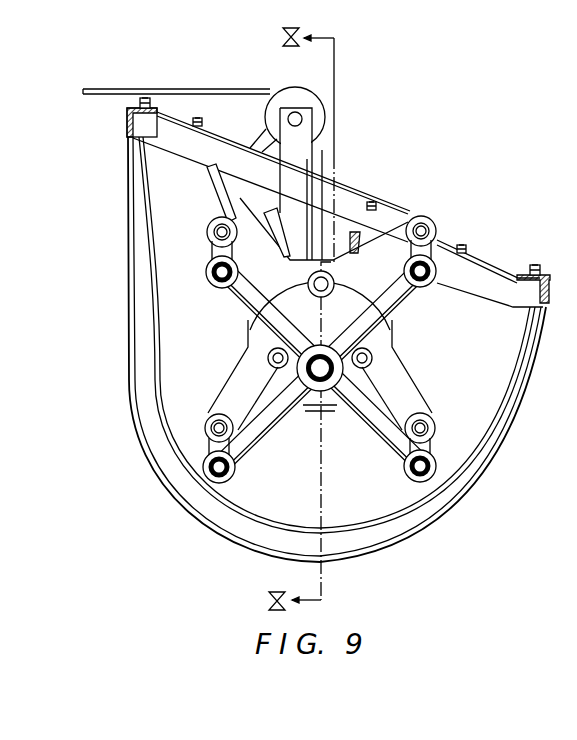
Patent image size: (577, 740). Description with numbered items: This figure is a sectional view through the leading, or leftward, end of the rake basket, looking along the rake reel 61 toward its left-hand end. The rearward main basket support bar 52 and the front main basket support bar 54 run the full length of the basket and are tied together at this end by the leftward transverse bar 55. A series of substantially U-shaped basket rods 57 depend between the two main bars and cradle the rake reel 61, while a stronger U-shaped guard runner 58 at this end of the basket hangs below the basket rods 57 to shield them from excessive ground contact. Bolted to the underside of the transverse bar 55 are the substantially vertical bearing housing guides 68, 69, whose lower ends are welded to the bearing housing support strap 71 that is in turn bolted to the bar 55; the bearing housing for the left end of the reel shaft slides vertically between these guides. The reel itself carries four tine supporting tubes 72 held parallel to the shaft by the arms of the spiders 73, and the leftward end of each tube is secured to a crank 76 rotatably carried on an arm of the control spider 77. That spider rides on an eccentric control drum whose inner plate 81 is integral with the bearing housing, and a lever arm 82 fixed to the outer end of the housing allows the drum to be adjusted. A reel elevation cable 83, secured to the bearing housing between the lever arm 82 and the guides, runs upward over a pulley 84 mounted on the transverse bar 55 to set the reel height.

The rearward main basket support bar 52 is at (544, 282).
The front main basket support bar 54 is at (127, 122).
The leftward transverse bar 55 is at (480, 273).
The basket rods 57 is at (162, 370).
The guard runner 58 is at (148, 457).
The rake reel 61 is at (373, 450).
The bearing housing guide 68 is at (356, 236).
The bearing housing guide 69 is at (303, 215).
The bearing housing support strap 71 is at (218, 188).
The tine supporting tubes 72 is at (215, 283).
The spiders 73 is at (260, 440).
The crank 76 is at (443, 440).
The control spider 77 is at (390, 370).
The inner plate 81 is at (330, 315).
The lever arm 82 is at (273, 228).
The reel elevation cable 83 is at (170, 89).
The pulley 84 is at (307, 100).